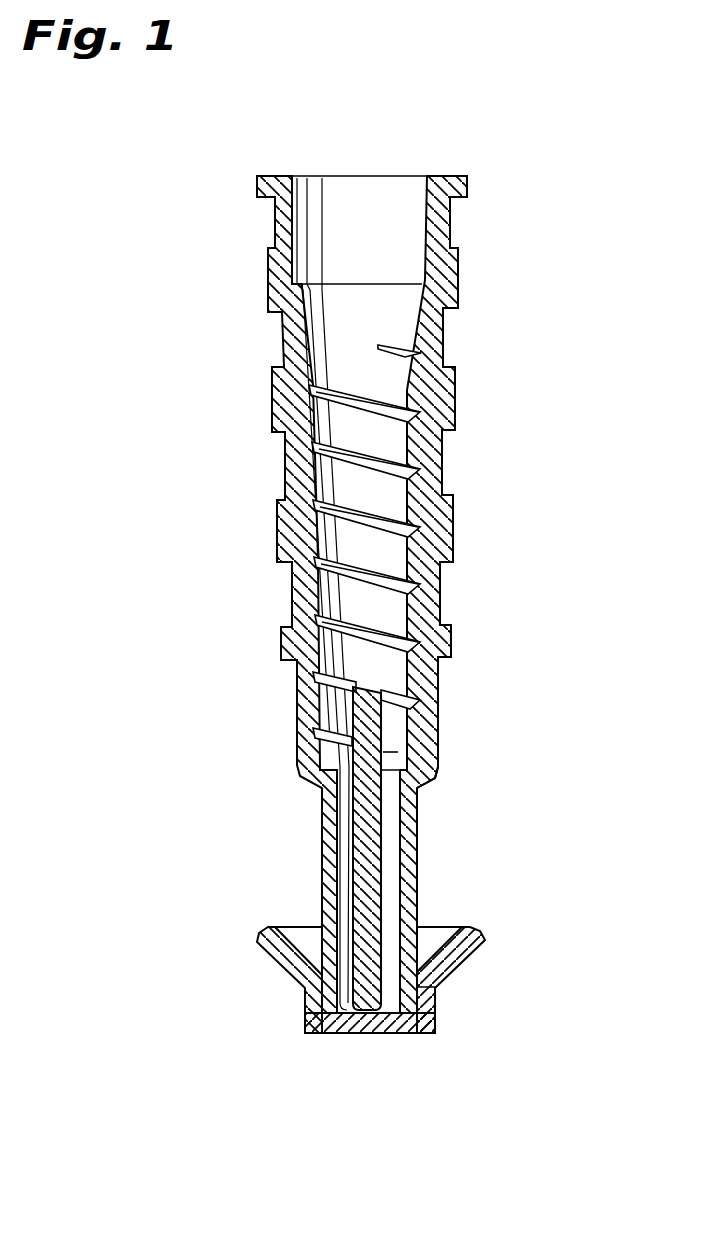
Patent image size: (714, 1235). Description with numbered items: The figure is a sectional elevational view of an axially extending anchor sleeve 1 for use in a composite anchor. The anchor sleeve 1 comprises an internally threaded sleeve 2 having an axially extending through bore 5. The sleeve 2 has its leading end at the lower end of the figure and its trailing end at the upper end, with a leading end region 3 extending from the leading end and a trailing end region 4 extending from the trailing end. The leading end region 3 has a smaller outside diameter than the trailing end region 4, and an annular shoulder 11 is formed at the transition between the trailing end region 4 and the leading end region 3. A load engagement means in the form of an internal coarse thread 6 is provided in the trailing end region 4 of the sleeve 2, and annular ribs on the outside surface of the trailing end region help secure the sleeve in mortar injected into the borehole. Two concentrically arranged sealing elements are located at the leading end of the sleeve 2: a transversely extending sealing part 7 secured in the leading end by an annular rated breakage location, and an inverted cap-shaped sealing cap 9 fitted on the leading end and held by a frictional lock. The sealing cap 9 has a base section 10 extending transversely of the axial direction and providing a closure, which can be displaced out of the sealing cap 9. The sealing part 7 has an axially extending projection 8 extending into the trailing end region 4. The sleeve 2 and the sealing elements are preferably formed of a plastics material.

The anchor sleeve 1 is at (492, 297).
The internally threaded sleeve 2 is at (430, 512).
The leading end region 3 is at (418, 892).
The trailing end region 4 is at (440, 213).
The through bore 5 is at (297, 220).
The internal coarse thread 6 is at (335, 474).
The sealing part 7 is at (363, 1035).
The projection 8 is at (370, 840).
The sealing cap 9 is at (460, 964).
The base section 10 is at (399, 1035).
The annular shoulder 11 is at (436, 771).